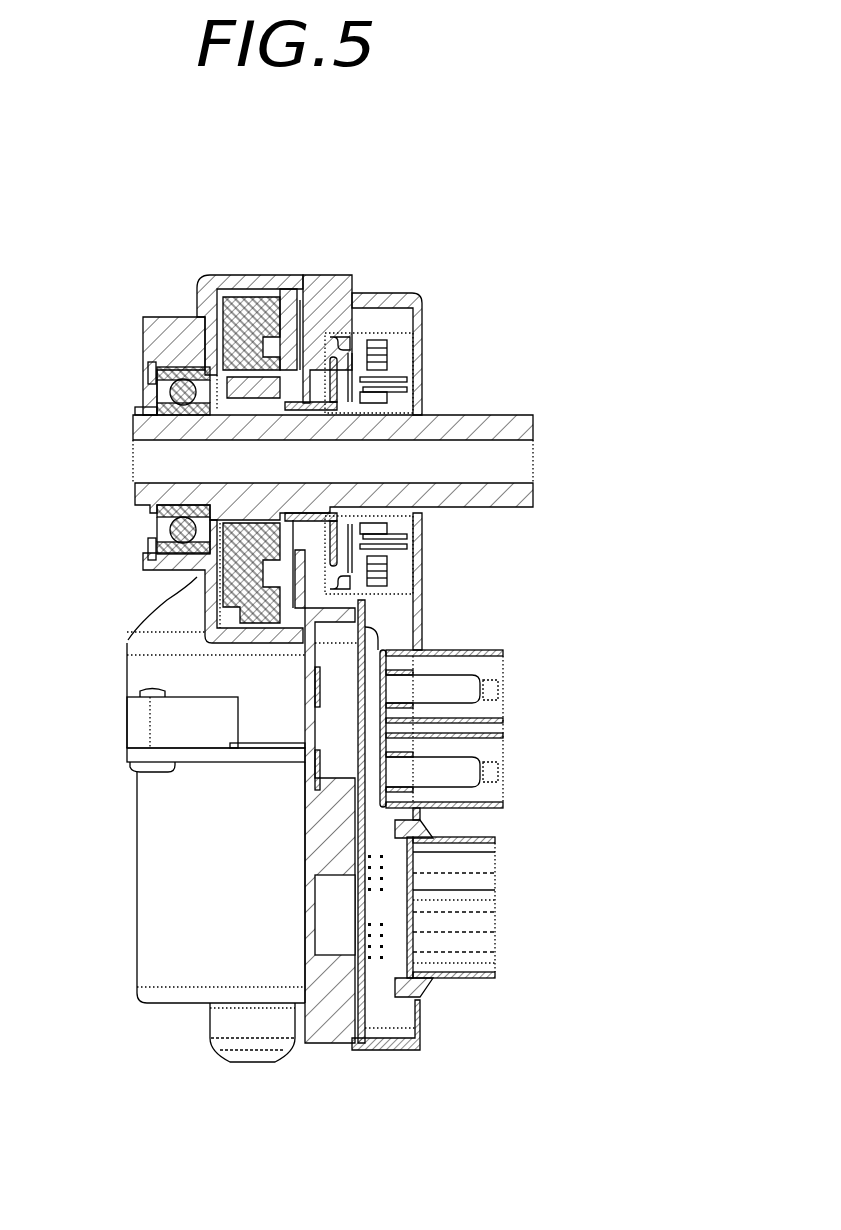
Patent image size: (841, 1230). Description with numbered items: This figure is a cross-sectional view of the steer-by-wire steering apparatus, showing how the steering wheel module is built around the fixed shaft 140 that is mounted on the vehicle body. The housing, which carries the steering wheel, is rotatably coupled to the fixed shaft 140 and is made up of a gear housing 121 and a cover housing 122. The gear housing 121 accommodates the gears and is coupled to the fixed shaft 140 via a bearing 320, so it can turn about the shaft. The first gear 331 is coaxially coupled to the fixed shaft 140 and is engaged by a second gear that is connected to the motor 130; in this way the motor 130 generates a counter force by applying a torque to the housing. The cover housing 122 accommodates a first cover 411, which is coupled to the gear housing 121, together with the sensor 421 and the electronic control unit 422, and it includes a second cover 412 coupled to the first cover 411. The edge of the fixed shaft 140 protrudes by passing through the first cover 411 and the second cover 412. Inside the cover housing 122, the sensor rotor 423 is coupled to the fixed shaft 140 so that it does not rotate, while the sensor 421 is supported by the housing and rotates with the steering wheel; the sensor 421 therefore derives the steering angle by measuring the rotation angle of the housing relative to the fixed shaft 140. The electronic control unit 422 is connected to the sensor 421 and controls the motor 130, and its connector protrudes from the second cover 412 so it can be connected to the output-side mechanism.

The gear housing 121 is at (173, 317).
The cover housing 122 is at (309, 411).
The first cover 411 is at (330, 275).
The second cover 412 is at (387, 320).
The sensor rotor 423 is at (327, 378).
The fixed shaft 140 is at (535, 425).
The bearing 320 is at (170, 397).
The sensor 421 is at (385, 560).
The first gear 331 is at (197, 573).
The electronic control unit 422 is at (307, 810).
The motor 130 is at (170, 918).